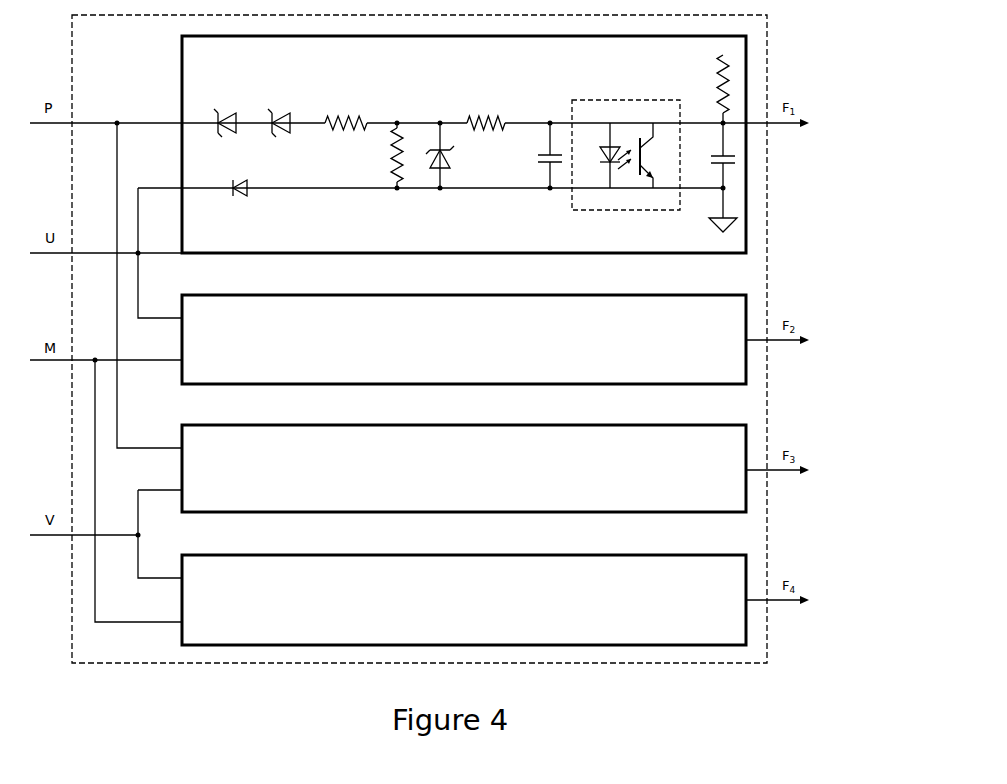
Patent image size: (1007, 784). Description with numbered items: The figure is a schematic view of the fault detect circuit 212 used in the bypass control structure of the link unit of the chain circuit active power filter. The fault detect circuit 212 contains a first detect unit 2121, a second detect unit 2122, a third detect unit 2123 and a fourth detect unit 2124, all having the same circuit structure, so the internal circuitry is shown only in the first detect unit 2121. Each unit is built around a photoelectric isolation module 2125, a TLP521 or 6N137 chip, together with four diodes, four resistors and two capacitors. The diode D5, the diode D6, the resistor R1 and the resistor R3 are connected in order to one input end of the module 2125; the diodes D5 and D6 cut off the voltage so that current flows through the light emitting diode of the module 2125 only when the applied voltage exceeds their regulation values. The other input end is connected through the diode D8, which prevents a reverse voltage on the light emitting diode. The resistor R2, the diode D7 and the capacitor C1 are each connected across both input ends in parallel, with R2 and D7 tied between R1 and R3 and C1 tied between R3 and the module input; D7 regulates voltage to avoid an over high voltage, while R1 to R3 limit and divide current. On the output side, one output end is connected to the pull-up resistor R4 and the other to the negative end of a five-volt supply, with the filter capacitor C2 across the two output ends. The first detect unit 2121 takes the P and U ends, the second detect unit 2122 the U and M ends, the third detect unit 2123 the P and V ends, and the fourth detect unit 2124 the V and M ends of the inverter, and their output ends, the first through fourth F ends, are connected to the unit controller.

The fault detect circuit 212 is at (419, 339).
The first detect unit 2121 is at (442, 144).
The second detect unit 2122 is at (464, 339).
The third detect unit 2123 is at (464, 468).
The fourth detect unit 2124 is at (464, 600).
The photoelectric isolation module 2125 is at (626, 155).
The diode D5 is at (227, 114).
The diode D6 is at (280, 114).
The diode D7 is at (450, 156).
The diode D8 is at (241, 200).
The resistor R1 is at (346, 110).
The resistor R2 is at (380, 156).
The resistor R3 is at (486, 111).
The resistor R4 is at (711, 82).
The capacitor C1 is at (537, 156).
The capacitor C2 is at (713, 177).